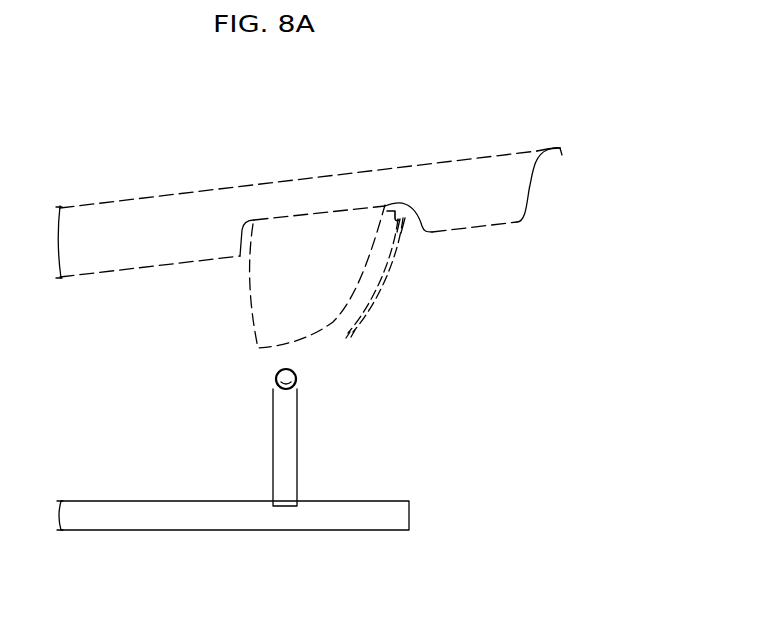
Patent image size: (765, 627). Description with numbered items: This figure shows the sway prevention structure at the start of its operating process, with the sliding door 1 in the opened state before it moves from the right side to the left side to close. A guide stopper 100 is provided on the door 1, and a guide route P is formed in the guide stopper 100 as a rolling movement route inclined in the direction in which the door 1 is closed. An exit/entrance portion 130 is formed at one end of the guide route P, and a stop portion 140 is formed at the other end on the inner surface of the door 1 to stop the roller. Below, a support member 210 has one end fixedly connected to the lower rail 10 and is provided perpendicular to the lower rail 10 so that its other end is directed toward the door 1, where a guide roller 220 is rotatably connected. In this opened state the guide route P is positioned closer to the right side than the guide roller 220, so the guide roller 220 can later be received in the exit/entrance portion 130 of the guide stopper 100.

The door 1 is at (125, 228).
The guide stopper 100 is at (310, 233).
The stop portion 140 is at (397, 210).
The guide route P is at (377, 252).
The exit/entrance portion 130 is at (340, 328).
The guide roller 220 is at (276, 373).
The support member 210 is at (282, 428).
The lower rail 10 is at (201, 513).